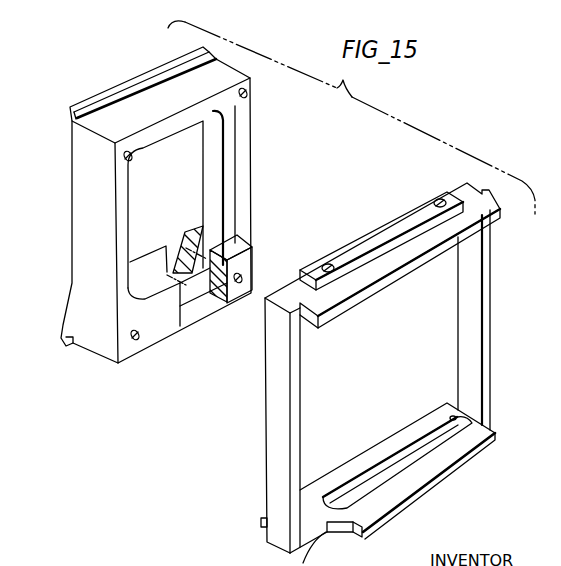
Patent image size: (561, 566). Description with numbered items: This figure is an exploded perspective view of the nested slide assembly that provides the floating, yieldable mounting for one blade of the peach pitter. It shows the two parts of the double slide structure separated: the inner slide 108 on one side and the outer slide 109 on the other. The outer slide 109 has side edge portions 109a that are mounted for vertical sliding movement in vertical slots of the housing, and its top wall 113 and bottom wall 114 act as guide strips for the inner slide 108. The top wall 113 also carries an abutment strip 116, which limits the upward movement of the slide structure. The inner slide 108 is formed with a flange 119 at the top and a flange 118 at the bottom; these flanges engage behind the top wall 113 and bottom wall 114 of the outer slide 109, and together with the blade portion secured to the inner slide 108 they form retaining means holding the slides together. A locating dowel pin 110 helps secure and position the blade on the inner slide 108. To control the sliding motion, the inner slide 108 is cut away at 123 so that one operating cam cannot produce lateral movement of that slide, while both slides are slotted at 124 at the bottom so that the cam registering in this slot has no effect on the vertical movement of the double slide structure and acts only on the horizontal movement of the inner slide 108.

The inner slide 108 is at (169, 339).
The outer slide 109 is at (400, 515).
The side edge portions 109a is at (280, 411).
The locating dowel pin 110 is at (247, 96).
The top wall 113 is at (417, 247).
The bottom wall 114 is at (460, 445).
The abutment strip 116 is at (393, 232).
The flange 118 is at (67, 342).
The flange 119 is at (130, 82).
The cut away 123 is at (232, 165).
The slot 124 is at (196, 242).